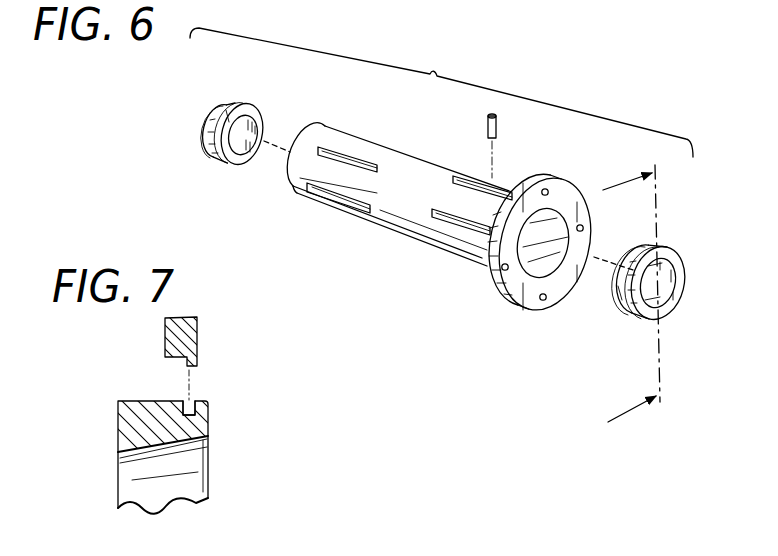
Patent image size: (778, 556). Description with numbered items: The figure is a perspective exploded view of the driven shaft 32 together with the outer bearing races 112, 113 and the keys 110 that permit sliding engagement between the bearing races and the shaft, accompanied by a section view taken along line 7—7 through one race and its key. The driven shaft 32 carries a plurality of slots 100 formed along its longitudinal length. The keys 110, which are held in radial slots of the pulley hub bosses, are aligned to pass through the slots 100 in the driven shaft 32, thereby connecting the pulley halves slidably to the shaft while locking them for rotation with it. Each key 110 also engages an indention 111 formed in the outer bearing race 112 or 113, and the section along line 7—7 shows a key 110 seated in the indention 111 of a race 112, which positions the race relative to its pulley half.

In FIG. 6, the slots 100 is at (470, 180).
In FIG. 6, the driven shaft 32 is at (505, 318).
In FIG. 6, the keys 110 is at (497, 121).
In FIG. 7, the keys 110 is at (198, 330).
In FIG. 6, the indentions 111 is at (203, 130).
In FIG. 7, the indentions 111 is at (192, 404).
In FIG. 6, the outer bearing race 112 is at (250, 112).
In FIG. 7, the outer bearing race 112 is at (118, 425).
In FIG. 6, the outer bearing race 113 is at (645, 317).
In FIG. 6, the section line 7— 7 is at (631, 288).